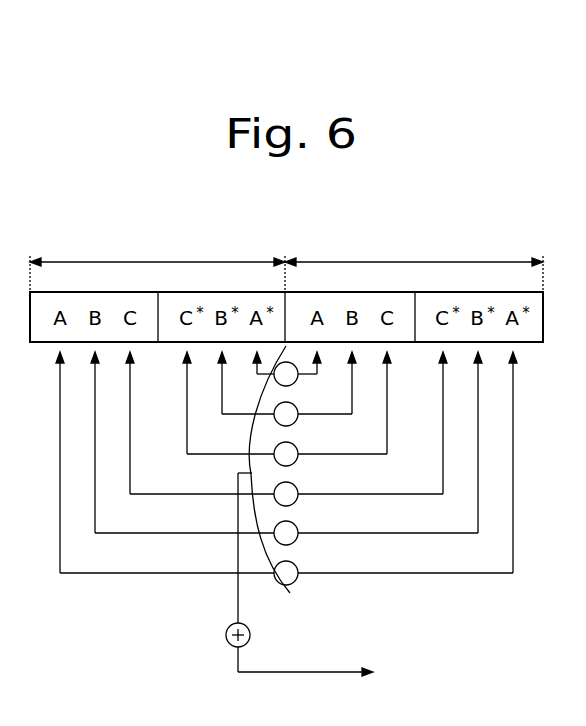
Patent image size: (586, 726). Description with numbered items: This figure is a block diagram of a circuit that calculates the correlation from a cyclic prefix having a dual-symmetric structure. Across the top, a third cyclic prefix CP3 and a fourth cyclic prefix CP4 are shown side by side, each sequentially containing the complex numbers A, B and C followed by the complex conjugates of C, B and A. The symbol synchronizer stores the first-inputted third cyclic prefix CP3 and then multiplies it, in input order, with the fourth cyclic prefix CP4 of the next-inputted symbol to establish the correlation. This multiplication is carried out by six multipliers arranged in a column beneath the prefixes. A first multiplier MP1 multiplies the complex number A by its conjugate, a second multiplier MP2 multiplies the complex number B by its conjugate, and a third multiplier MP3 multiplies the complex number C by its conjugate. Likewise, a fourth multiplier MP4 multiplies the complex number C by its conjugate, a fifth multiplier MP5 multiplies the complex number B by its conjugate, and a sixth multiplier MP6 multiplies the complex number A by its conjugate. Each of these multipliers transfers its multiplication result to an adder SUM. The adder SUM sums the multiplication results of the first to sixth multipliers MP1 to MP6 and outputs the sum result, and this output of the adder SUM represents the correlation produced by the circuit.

The third cyclic prefix CP3 is at (157, 262).
The fourth cyclic prefix CP4 is at (414, 262).
The first multiplier MP1 is at (286, 474).
The second multiplier MP2 is at (286, 454).
The third multiplier MP3 is at (286, 434).
The fourth multiplier MP4 is at (287, 414).
The fifth multiplier MP5 is at (287, 394).
The sixth multiplier MP6 is at (292, 374).
The adder SUM is at (365, 514).